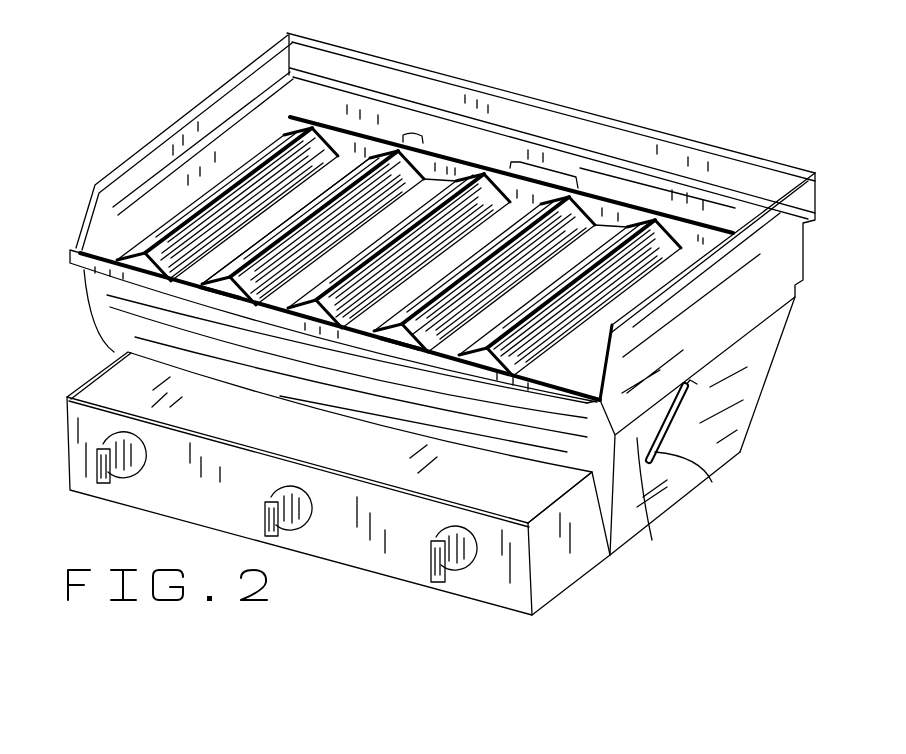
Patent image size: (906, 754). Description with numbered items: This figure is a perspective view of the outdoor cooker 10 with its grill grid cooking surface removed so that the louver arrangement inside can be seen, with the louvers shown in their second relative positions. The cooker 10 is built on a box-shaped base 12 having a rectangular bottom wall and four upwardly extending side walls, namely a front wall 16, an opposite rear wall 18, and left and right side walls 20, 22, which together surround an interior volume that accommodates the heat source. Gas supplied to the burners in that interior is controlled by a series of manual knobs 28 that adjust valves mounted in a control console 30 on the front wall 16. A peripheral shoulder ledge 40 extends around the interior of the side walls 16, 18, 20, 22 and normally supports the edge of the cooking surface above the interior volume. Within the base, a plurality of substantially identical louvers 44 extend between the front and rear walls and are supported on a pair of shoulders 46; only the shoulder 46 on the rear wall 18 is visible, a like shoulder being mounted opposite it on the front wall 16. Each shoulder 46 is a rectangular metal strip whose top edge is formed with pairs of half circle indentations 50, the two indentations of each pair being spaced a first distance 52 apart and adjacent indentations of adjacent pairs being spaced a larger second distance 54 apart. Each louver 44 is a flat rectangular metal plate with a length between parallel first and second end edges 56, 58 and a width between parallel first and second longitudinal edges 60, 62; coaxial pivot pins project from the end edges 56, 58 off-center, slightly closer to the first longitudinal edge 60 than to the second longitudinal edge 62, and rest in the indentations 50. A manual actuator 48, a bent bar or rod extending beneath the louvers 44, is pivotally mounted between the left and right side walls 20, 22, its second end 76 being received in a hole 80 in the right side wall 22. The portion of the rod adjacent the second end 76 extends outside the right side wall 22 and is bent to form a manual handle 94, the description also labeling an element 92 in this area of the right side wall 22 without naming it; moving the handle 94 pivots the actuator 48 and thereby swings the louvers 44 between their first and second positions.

The cooker 10 is at (536, 62).
The base 12 is at (792, 364).
The front wall 16 is at (128, 312).
The rear wall 18 is at (615, 140).
The left side wall 20 is at (190, 127).
The right side wall 22 is at (798, 246).
The manual knobs 28 is at (103, 495).
The control console 30 is at (90, 425).
The peripheral shoulder ledge 40 is at (133, 202).
The louvers 44 is at (333, 133).
The shoulders 46 is at (447, 160).
The manual actuator 48 is at (740, 456).
The half circle indentations 50 is at (307, 120).
The first distance 52 is at (417, 133).
The second distance 54 is at (555, 173).
The first end edge 56 is at (412, 345).
The second end edge 58 is at (603, 202).
The first longitudinal edge 60 is at (248, 276).
The second longitudinal edge 62 is at (272, 232).
The second end 76 is at (646, 540).
The hole 80 is at (696, 375).
The support rod 92 is at (697, 392).
The manual handle 94 is at (712, 482).